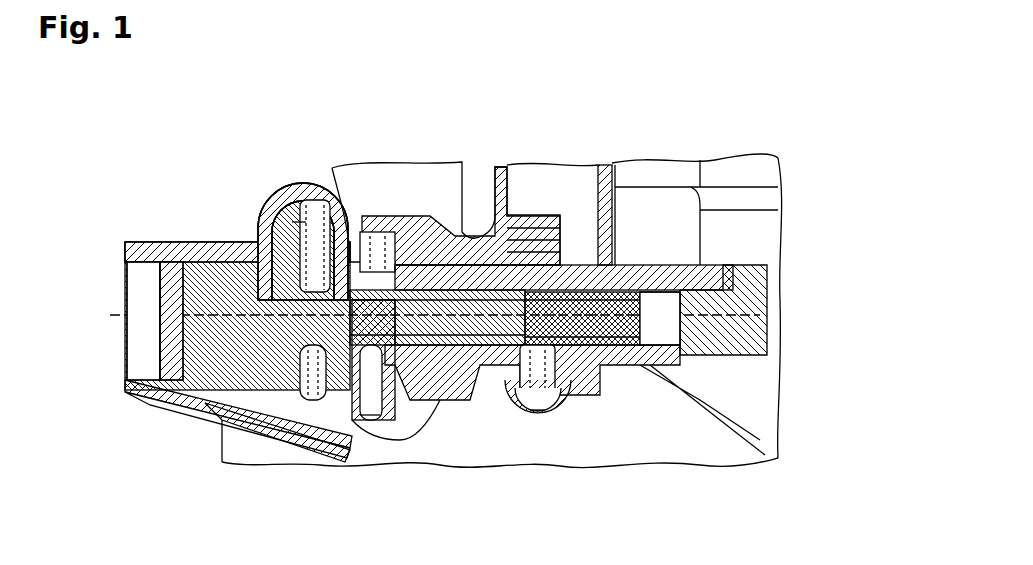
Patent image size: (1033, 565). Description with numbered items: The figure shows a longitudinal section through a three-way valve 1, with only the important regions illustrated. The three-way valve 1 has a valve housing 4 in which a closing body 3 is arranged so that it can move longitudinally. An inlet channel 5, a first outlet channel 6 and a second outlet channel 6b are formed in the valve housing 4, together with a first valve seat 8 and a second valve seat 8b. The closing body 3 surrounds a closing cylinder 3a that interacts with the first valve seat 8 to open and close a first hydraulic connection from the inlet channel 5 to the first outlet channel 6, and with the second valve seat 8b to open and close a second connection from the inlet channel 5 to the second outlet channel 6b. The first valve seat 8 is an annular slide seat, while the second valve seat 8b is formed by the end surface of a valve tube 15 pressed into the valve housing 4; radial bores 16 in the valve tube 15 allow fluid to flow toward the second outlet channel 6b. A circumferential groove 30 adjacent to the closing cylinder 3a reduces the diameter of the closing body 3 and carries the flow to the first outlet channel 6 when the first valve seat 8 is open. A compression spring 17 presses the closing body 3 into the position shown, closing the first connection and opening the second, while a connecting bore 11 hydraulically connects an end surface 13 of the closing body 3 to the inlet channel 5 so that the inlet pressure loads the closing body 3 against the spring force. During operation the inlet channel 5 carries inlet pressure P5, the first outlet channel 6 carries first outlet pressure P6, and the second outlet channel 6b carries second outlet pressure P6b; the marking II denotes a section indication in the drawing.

The three-way valve 1 is at (585, 132).
The closing body 3 is at (210, 285).
The closing cylinder 3a is at (322, 400).
The valve housing 4 is at (473, 400).
The inlet channel 5 is at (408, 420).
The first outlet channel 6 is at (300, 213).
The second outlet channel 6b is at (533, 400).
The first valve seat 8 is at (343, 413).
The second valve seat 8b is at (312, 240).
The connecting bore 11 is at (290, 407).
The end surface 13 is at (178, 342).
The valve tube 15 is at (605, 360).
The radial bores 16 is at (503, 400).
The compression spring 17 is at (668, 345).
The circumferential groove 30 is at (262, 410).
The inlet pressure P5 is at (365, 415).
The first outlet pressure P6 is at (300, 223).
The second outlet pressure P6b is at (545, 413).
The section line II is at (527, 215).